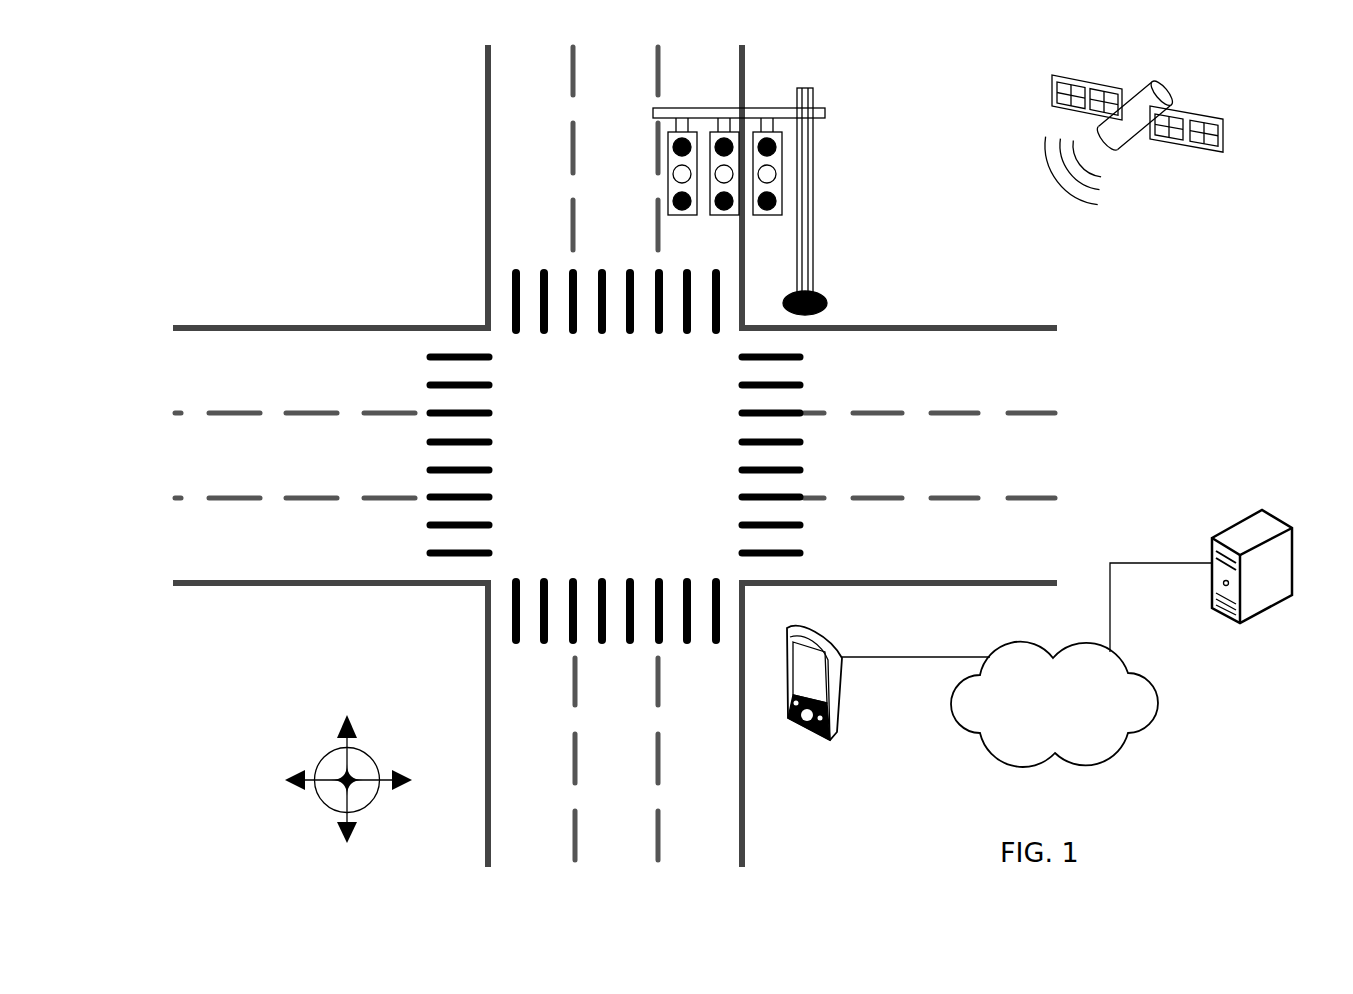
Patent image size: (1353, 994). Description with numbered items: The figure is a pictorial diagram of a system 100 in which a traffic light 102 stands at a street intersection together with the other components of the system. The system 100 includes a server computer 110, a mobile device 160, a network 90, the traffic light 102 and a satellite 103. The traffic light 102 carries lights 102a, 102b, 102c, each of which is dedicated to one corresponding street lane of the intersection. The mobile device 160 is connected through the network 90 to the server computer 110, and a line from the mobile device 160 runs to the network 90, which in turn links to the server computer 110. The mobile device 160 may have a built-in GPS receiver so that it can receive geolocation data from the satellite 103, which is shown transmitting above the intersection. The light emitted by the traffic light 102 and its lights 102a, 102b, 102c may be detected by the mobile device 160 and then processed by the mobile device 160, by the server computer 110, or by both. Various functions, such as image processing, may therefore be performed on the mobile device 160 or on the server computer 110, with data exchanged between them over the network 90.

The system 100 is at (326, 123).
The traffic light 102 is at (826, 102).
The light 102a is at (672, 173).
The light 102b is at (711, 137).
The light 102c is at (754, 128).
The satellite 103 is at (1200, 102).
The server computer 110 is at (1237, 520).
The network 90 is at (1128, 734).
The mobile device 160 is at (843, 705).